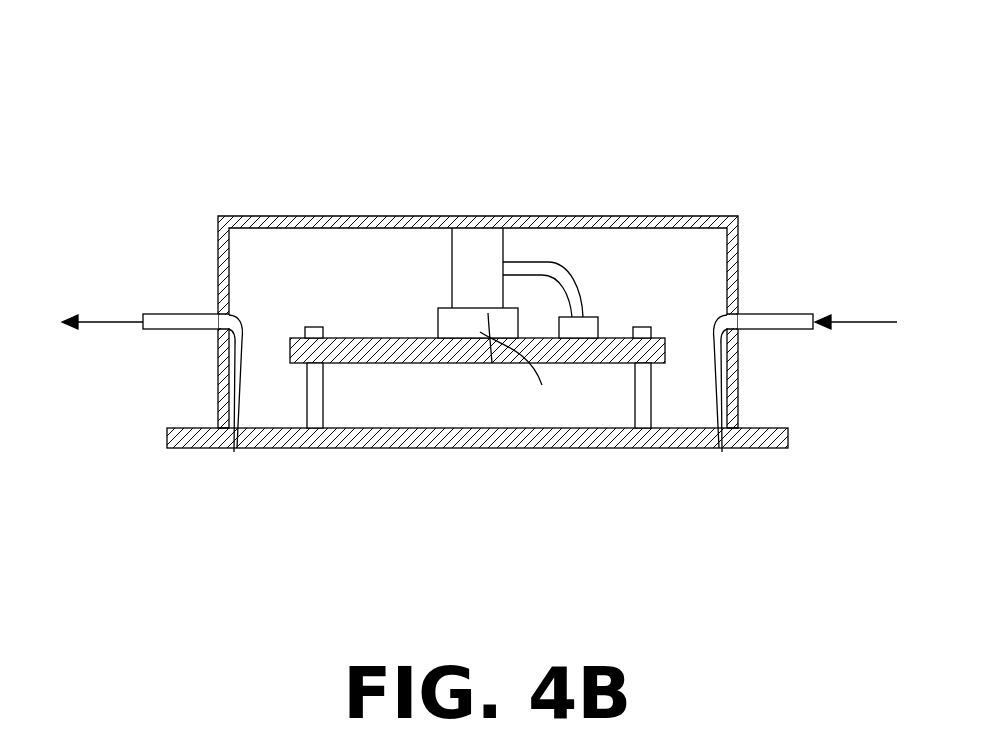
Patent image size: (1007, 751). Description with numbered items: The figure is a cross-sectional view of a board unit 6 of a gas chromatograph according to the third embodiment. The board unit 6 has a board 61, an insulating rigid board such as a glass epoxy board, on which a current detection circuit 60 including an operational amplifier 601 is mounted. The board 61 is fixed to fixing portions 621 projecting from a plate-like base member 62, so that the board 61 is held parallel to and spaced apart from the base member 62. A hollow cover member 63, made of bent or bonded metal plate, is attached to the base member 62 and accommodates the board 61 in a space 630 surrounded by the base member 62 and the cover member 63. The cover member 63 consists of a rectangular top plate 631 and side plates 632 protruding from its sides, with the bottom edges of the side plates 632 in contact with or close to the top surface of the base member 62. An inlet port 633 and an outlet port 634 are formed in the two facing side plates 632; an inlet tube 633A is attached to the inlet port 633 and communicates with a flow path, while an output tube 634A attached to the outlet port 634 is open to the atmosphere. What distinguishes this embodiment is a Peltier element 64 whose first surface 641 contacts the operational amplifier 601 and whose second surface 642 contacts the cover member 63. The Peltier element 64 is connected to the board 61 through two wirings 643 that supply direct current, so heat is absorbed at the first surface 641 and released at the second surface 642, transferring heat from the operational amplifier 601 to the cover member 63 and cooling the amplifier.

The board unit 6 is at (593, 133).
The current detection circuit 60 is at (437, 323).
The operational amplifier 601 is at (492, 363).
The board 61 is at (372, 363).
The base member 62 is at (596, 440).
The fixing portions 621 is at (315, 422).
The cover member 63 is at (677, 216).
The space 630 is at (453, 403).
The top plate 631 is at (281, 216).
The side plates 632 is at (218, 385).
The inlet port 633 is at (719, 448).
The inlet tube 633A is at (797, 290).
The outlet port 634 is at (237, 448).
The output tube 634A is at (185, 314).
The Peltier element 64 is at (457, 297).
The first surface 641 is at (529, 377).
The second surface 642 is at (481, 216).
The wirings 643 is at (618, 271).